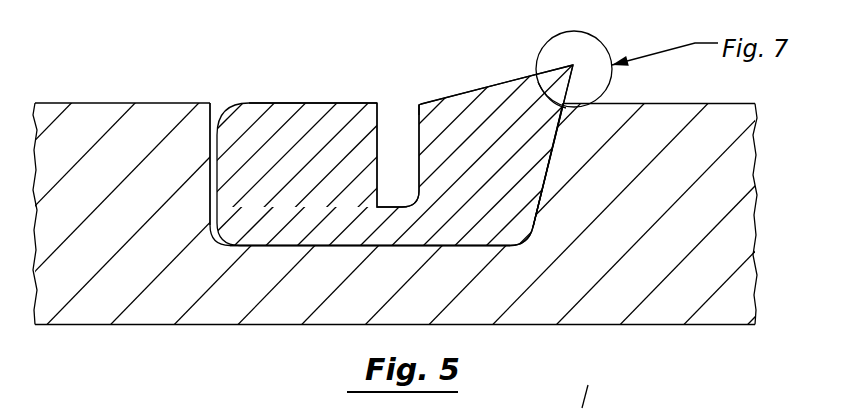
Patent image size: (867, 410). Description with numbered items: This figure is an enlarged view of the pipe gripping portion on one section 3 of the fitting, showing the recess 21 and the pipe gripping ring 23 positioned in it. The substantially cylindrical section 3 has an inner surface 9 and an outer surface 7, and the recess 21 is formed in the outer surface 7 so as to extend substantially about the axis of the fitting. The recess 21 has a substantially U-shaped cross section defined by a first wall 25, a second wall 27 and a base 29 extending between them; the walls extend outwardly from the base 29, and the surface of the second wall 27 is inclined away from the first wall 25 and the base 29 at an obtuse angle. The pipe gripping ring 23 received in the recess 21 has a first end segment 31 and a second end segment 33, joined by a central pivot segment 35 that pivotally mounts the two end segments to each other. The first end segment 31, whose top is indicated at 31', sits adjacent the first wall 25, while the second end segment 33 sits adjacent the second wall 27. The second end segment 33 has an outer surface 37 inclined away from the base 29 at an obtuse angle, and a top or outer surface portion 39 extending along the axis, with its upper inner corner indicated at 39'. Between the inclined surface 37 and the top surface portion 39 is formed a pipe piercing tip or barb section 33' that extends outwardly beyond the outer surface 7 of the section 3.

The section 3 is at (667, 246).
The outer surface 7 is at (695, 103).
The inner surface 9 is at (683, 326).
The recess 21 is at (207, 209).
The pipe gripping ring 23 is at (343, 140).
The first wall 25 is at (208, 188).
The second wall 27 is at (553, 192).
The base 29 is at (340, 247).
The first end segment 31 is at (253, 155).
The top surface of first leg 31' is at (313, 76).
The second end segment 33 is at (415, 155).
The tip section 33' is at (604, 69).
The central pivot segment 35 is at (405, 218).
The outer surface 37 is at (547, 163).
The top surface portion 39 is at (497, 68).
The upper inner corner of second leg 39' is at (427, 81).